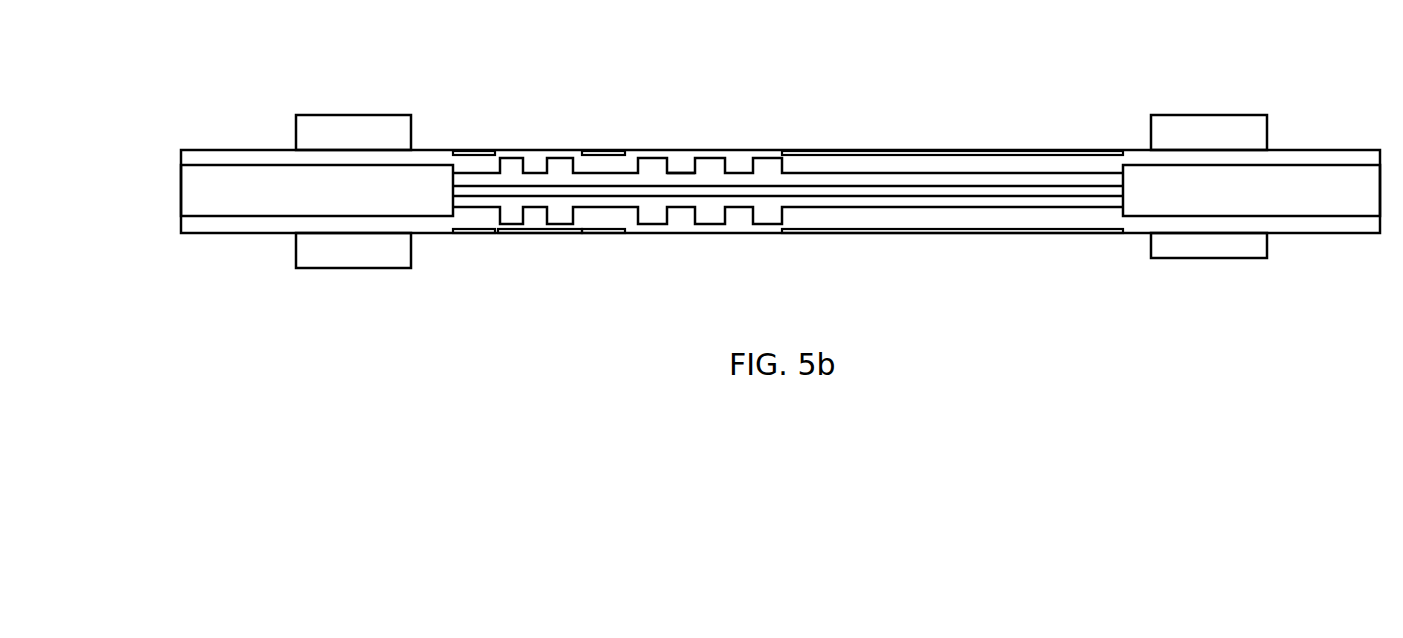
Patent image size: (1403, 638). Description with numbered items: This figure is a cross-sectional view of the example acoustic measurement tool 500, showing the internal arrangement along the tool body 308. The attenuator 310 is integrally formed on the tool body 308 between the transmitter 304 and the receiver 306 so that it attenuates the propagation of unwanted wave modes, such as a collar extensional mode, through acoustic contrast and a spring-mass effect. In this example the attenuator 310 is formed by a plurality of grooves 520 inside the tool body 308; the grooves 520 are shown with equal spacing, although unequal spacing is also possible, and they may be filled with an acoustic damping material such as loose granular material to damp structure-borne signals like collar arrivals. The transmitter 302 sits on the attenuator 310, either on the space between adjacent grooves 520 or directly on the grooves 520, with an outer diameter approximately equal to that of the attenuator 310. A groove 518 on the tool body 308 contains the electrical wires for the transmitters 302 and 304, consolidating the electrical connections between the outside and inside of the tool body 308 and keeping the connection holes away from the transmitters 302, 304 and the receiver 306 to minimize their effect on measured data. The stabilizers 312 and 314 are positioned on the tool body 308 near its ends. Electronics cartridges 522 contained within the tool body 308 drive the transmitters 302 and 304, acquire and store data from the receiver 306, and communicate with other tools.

The acoustic measurement tool 500 is at (276, 60).
The electronics cartridges 522 is at (268, 165).
The stabilizer 314 is at (352, 270).
The stabilizer 312 is at (1207, 260).
The transmitter 304 is at (478, 150).
The tool body 308 is at (1350, 235).
The groove 518 is at (510, 236).
The transmitter 302 is at (603, 235).
The attenuator 310 is at (723, 235).
The receiver 306 is at (952, 235).
The grooves 520 is at (681, 160).